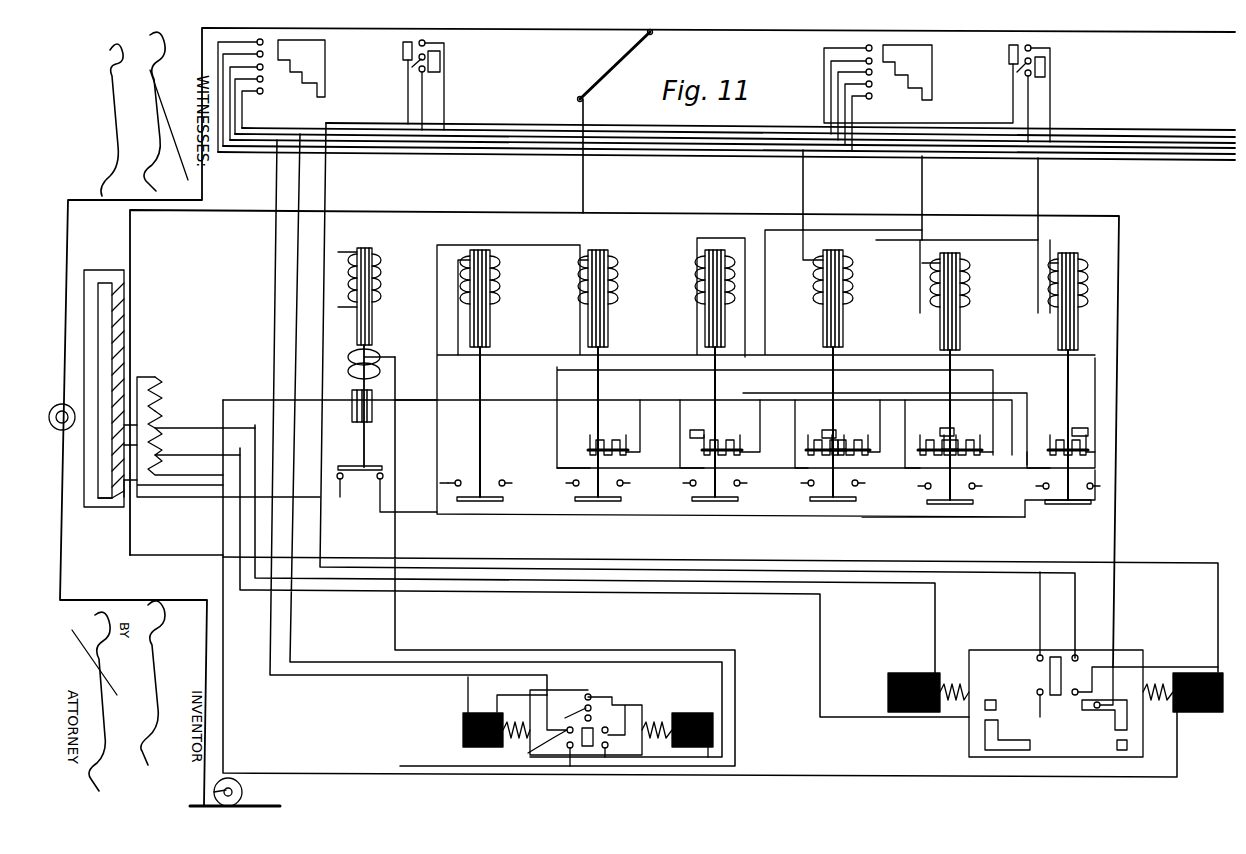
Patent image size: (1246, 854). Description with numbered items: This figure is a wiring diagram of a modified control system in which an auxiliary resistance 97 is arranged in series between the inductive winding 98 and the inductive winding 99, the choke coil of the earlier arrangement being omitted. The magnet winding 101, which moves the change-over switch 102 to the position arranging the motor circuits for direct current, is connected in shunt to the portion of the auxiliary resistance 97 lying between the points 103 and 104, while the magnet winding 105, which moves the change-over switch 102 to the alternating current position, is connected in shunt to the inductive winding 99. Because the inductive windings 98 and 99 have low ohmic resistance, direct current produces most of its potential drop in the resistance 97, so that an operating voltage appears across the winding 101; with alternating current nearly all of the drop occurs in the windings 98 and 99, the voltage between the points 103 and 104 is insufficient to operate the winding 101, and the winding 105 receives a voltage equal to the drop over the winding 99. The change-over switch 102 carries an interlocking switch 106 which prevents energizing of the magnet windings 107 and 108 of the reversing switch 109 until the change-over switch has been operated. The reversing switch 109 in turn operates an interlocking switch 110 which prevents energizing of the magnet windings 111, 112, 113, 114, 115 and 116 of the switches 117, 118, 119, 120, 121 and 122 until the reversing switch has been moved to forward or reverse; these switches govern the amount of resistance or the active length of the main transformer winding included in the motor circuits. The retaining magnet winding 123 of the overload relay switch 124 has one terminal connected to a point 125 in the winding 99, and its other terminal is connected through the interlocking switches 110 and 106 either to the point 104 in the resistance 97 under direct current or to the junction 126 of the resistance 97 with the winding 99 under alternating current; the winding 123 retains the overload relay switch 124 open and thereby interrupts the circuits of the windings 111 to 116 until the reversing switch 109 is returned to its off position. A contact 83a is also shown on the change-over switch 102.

The inductive winding 98 is at (124, 332).
The auxiliary resistance 97 is at (158, 396).
The point in the auxiliary resistance 103 is at (158, 420).
The point in the auxiliary resistance 104 is at (158, 446).
The junction of the auxiliary resistance with the inductive winding 126 is at (158, 474).
The inductive winding 99 is at (104, 496).
The point in the transformer winding 125 is at (124, 497).
The retaining magnet winding 123 is at (372, 342).
The overload relay switch 124 is at (360, 455).
The magnet winding 111 is at (492, 294).
The magnet winding 112 is at (610, 294).
The magnet winding 113 is at (705, 298).
The magnet winding 114 is at (823, 298).
The magnet winding 115 is at (962, 297).
The magnet winding 116 is at (1080, 297).
The switch 117 is at (500, 486).
The switch 118 is at (618, 486).
The switch 119 is at (735, 486).
The switch 120 is at (853, 486).
The switch 121 is at (963, 486).
The switch 122 is at (1063, 478).
The magnet winding 107 is at (462, 730).
The magnet winding 108 is at (700, 713).
The reversing switch 109 is at (552, 740).
The interlocking switch 110 is at (580, 750).
The magnet winding 101 is at (887, 698).
The change-over switch 102 is at (968, 740).
The interlocking switch 106 is at (1055, 697).
The contact 83a is at (1097, 718).
The magnet winding 105 is at (1205, 712).